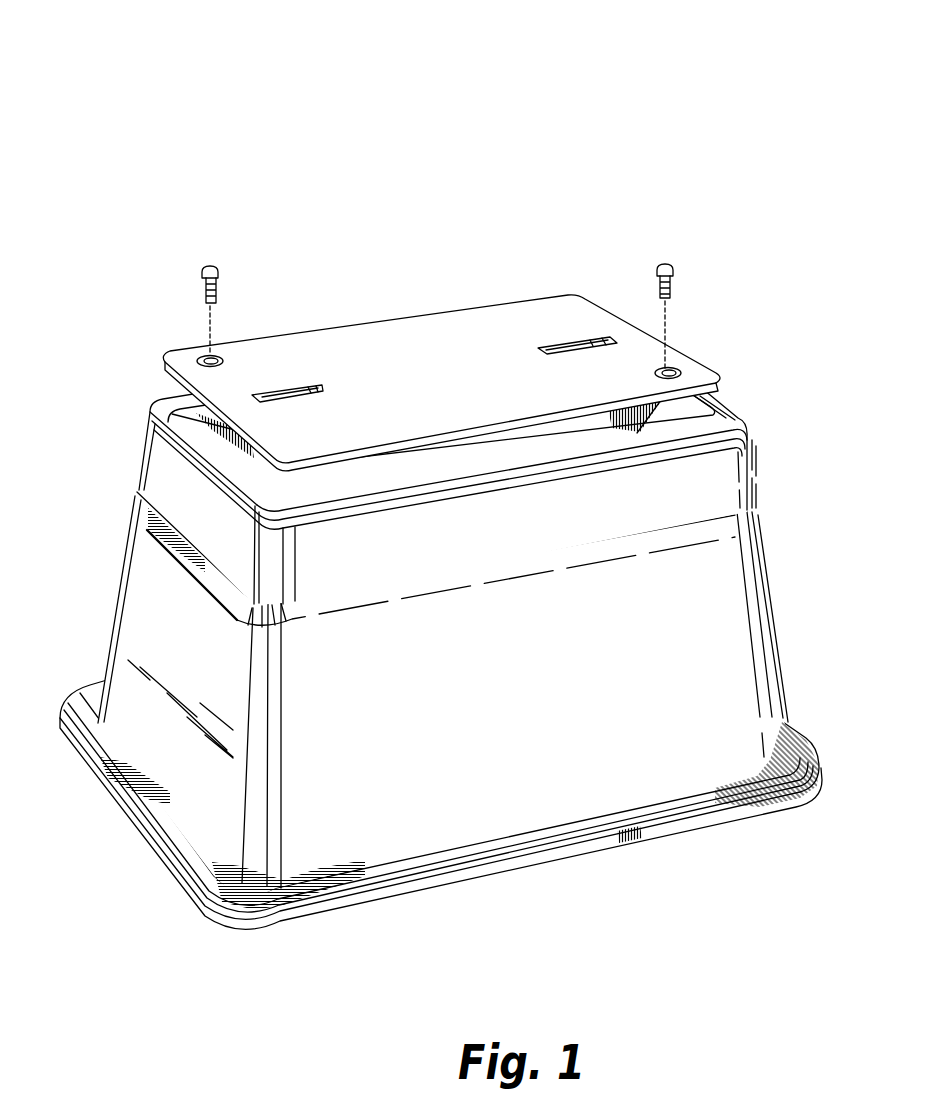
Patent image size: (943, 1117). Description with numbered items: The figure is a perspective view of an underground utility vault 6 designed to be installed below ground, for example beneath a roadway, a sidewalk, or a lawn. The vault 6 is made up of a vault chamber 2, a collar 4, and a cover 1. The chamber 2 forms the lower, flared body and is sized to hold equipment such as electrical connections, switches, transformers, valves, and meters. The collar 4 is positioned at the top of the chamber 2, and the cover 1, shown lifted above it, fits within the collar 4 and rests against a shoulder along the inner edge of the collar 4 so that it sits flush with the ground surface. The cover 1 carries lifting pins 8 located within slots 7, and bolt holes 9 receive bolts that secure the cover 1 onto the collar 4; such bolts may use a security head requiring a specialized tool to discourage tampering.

The cover 1 is at (441, 347).
The vault chamber 2 is at (110, 598).
The collar 4 is at (136, 440).
The underground utility vault 6 is at (111, 203).
The slots 7 is at (312, 386).
The lifting pins 8 is at (293, 387).
The bolt holes 9 is at (205, 350).